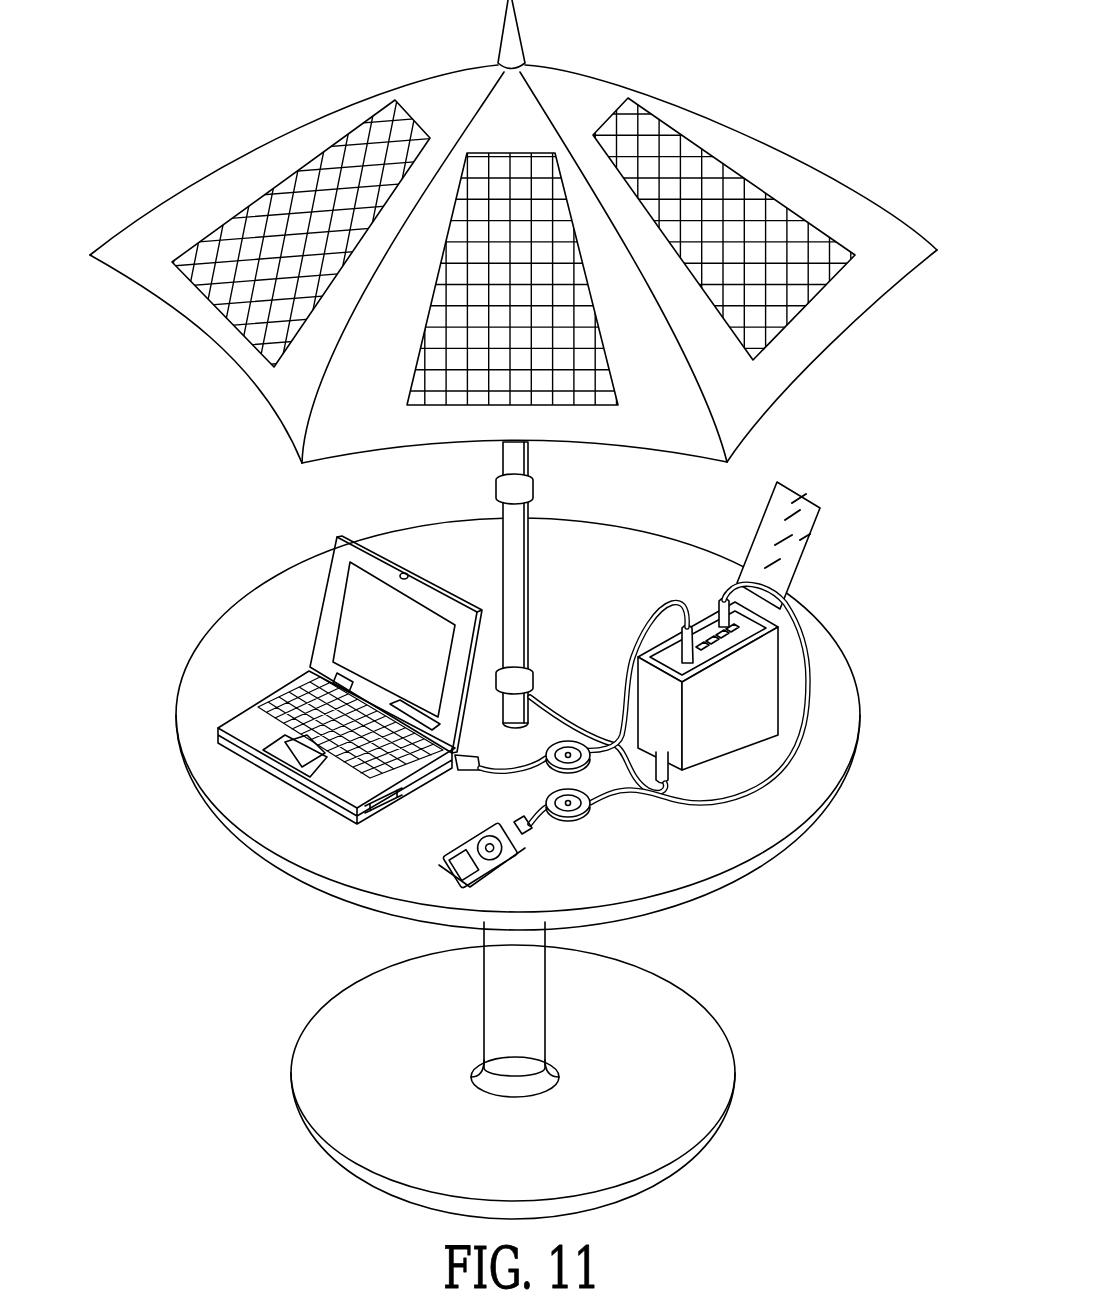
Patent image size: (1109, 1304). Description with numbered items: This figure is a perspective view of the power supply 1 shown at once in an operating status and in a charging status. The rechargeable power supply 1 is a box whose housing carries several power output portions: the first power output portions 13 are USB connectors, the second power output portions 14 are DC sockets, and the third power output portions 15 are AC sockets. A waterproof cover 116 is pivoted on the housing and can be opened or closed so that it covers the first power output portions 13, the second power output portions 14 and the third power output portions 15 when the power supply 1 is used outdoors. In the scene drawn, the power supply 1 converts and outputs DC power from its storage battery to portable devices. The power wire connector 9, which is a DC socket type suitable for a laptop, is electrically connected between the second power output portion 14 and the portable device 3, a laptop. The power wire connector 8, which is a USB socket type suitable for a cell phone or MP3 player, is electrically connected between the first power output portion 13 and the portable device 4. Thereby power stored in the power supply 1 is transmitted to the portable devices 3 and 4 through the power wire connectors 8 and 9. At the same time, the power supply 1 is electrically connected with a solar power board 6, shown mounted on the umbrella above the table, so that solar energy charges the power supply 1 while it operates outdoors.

The power supply 1 is at (778, 649).
The portable device 3 is at (278, 681).
The portable device 4 is at (440, 878).
The solar power board 6 is at (337, 138).
The power wire connector 8 is at (766, 793).
The power wire connector 9 is at (630, 610).
The first power output portion 13 is at (707, 620).
The second power output portion 14 is at (788, 748).
The third power output portion 15 is at (690, 662).
The waterproof cover 116 is at (820, 505).